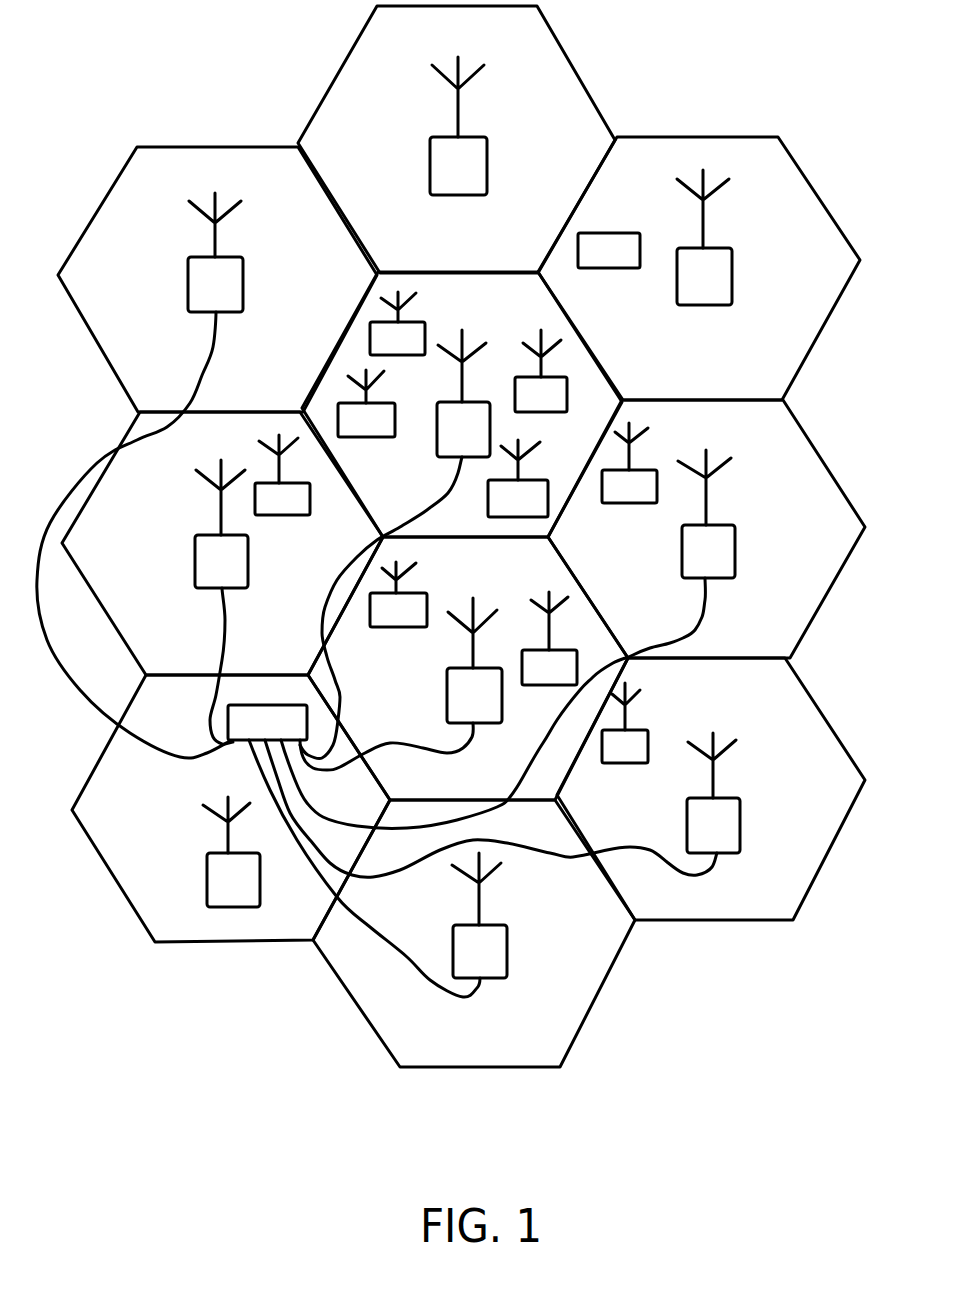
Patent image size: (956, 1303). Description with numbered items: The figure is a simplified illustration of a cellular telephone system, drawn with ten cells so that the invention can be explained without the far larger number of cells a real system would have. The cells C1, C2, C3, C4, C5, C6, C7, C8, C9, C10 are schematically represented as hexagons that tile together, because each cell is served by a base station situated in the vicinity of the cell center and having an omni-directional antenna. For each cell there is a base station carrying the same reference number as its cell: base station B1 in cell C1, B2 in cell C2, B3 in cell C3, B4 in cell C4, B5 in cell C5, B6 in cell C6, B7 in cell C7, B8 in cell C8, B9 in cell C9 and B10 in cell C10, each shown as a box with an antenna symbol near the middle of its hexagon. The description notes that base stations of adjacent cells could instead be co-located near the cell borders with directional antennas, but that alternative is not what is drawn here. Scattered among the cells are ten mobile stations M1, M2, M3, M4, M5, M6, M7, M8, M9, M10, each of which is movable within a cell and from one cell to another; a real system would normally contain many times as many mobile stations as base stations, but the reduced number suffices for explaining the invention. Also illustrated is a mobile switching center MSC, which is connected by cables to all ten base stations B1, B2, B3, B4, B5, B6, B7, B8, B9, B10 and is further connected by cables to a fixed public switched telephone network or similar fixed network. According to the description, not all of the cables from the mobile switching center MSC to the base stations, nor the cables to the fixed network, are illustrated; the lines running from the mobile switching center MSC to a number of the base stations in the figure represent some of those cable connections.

The cell C1 is at (410, 518).
The cell C2 is at (662, 383).
The cell C3 is at (667, 638).
The cell C4 is at (427, 788).
The cell C5 is at (182, 653).
The cell C6 is at (177, 388).
The cell C7 is at (411, 255).
The cell C8 is at (662, 895).
The cell C9 is at (427, 1033).
The cell C10 is at (178, 898).
The base station B1 is at (463, 393).
The base station B2 is at (704, 237).
The base station B3 is at (706, 514).
The base station B4 is at (474, 660).
The base station B5 is at (221, 524).
The base station B6 is at (215, 252).
The base station B7 is at (458, 126).
The base station B8 is at (713, 793).
The base station B9 is at (479, 915).
The base station B10 is at (231, 852).
The mobile station M1 is at (625, 724).
The mobile station M2 is at (282, 476).
The mobile station M3 is at (366, 404).
The mobile station M4 is at (541, 371).
The mobile station M5 is at (629, 464).
The mobile station M6 is at (397, 324).
The mobile station M7 is at (518, 478).
The mobile station M8 is at (549, 639).
The mobile station M9 is at (398, 595).
The mobile station M10 is at (609, 251).
The mobile switching center MSC is at (377, 654).